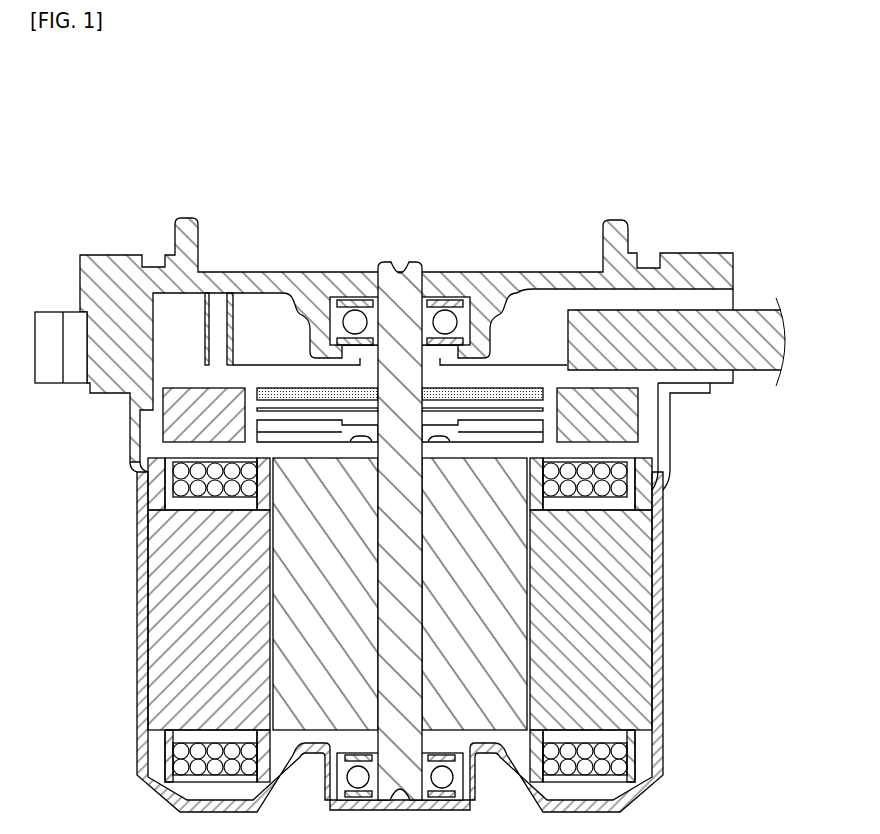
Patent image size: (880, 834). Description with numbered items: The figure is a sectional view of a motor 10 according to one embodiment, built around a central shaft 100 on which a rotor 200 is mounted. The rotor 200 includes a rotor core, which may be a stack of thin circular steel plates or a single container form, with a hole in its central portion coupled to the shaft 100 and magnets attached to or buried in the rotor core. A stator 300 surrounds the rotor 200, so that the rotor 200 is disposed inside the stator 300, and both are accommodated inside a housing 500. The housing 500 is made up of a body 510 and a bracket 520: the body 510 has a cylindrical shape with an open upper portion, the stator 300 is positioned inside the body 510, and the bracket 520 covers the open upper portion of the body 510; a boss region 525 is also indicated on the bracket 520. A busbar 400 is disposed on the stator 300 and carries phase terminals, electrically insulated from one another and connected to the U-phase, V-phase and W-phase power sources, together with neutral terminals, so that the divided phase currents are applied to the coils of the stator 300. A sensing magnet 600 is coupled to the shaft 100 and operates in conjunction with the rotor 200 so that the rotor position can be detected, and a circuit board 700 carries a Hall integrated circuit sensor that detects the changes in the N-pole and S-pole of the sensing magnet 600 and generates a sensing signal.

The motor 10 is at (88, 102).
The shaft 100 is at (400, 681).
The rotor 200 is at (472, 588).
The stator 300 is at (610, 553).
The busbar 400 is at (652, 437).
The housing 500 is at (410, 488).
The body 510 is at (137, 602).
The bracket 520 is at (78, 277).
The bearing holder 525 is at (473, 315).
The sensing magnet 600 is at (240, 427).
The circuit board 700 is at (240, 390).